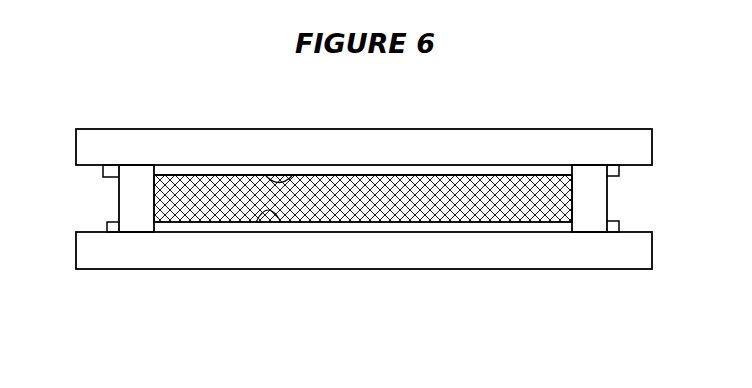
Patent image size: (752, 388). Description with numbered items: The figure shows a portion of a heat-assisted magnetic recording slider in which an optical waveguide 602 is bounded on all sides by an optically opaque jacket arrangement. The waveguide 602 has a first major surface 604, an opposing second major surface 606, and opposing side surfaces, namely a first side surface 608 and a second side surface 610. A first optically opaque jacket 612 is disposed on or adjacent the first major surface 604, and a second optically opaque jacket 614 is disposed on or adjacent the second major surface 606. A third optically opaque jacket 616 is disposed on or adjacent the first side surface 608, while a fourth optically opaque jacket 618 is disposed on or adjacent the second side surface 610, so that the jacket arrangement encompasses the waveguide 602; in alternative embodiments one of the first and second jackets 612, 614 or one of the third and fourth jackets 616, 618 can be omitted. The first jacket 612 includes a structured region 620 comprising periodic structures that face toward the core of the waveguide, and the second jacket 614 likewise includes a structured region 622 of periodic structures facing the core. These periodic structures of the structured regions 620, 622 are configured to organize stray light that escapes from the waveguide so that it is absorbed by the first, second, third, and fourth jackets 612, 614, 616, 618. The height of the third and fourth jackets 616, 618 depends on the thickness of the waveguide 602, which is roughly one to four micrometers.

The optical waveguide 602 is at (472, 193).
The first major surface 604 is at (285, 177).
The second major surface 606 is at (262, 209).
The first side surface 608 is at (567, 207).
The second side surface 610 is at (157, 207).
The first optically opaque jacket 612 is at (612, 129).
The second optically opaque jacket 614 is at (617, 269).
The third optically opaque jacket 616 is at (607, 197).
The fourth optically opaque jacket 618 is at (119, 196).
The structured region 620 is at (367, 175).
The structured region 622 is at (367, 222).